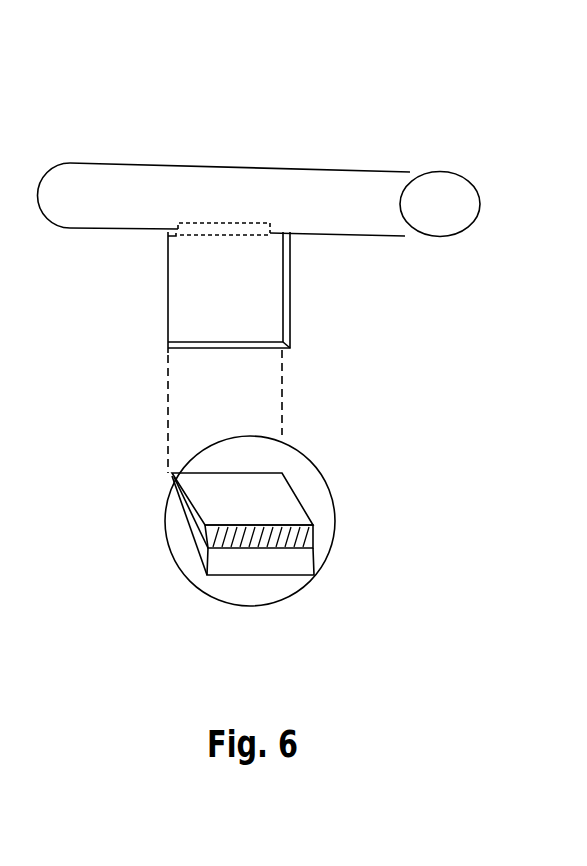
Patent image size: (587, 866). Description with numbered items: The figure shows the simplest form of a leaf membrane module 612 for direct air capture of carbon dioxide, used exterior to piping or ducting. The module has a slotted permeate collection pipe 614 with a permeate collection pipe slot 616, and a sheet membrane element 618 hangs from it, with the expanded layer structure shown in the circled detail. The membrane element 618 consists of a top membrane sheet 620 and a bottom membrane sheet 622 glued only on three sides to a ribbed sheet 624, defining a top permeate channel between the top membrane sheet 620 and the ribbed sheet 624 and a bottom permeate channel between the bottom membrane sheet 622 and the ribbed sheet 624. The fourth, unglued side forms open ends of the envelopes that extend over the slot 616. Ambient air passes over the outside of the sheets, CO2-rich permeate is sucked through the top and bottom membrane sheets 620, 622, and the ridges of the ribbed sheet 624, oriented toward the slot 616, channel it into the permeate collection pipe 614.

The leaf membrane module 612 is at (259, 248).
The slotted permeate collection pipe 614 is at (167, 160).
The permeate collection pipe slot 616 is at (165, 237).
The sheet membrane element 618 is at (300, 304).
The top membrane sheet 620 is at (308, 503).
The bottom membrane sheet 622 is at (313, 577).
The ribbed sheet 624 is at (313, 539).